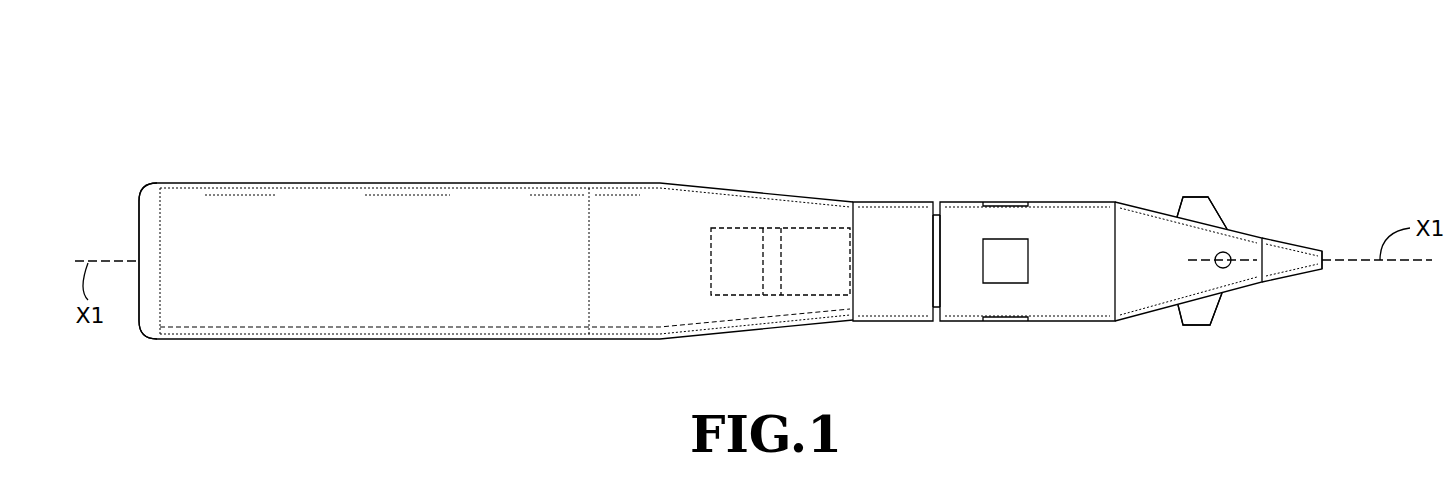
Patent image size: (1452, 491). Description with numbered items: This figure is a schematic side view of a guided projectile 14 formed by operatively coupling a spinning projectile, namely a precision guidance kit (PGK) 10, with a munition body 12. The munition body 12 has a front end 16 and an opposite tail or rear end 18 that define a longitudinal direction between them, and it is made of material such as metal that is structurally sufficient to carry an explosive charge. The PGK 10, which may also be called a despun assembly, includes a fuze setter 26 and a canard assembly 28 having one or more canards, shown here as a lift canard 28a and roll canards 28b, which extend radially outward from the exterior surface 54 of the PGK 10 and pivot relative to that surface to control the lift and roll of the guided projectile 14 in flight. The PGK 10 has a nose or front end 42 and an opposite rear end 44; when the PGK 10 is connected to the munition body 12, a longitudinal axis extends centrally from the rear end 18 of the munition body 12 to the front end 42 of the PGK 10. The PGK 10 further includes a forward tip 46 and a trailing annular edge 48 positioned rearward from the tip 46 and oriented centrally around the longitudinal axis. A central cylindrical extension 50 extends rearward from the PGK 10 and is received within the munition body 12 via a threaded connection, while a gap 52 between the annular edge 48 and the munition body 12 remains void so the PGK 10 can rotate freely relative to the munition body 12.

The precision guidance kit 10 is at (1092, 200).
The munition body 12 is at (535, 183).
The guided projectile 14 is at (583, 88).
The front end 16 is at (832, 192).
The rear end 18 is at (127, 237).
The fuze setter 26 is at (1292, 238).
The canard assembly 28 is at (1182, 272).
The lift canard 28a is at (1247, 266).
The roll canard 28b is at (1198, 206).
The front end 42 is at (1333, 245).
The rear end 44 is at (705, 242).
The forward tip 46 is at (1322, 270).
The annular edge 48 is at (937, 275).
The central cylindrical extension 50 is at (802, 233).
The gap 52 is at (937, 322).
The exterior surface 54 is at (1150, 212).